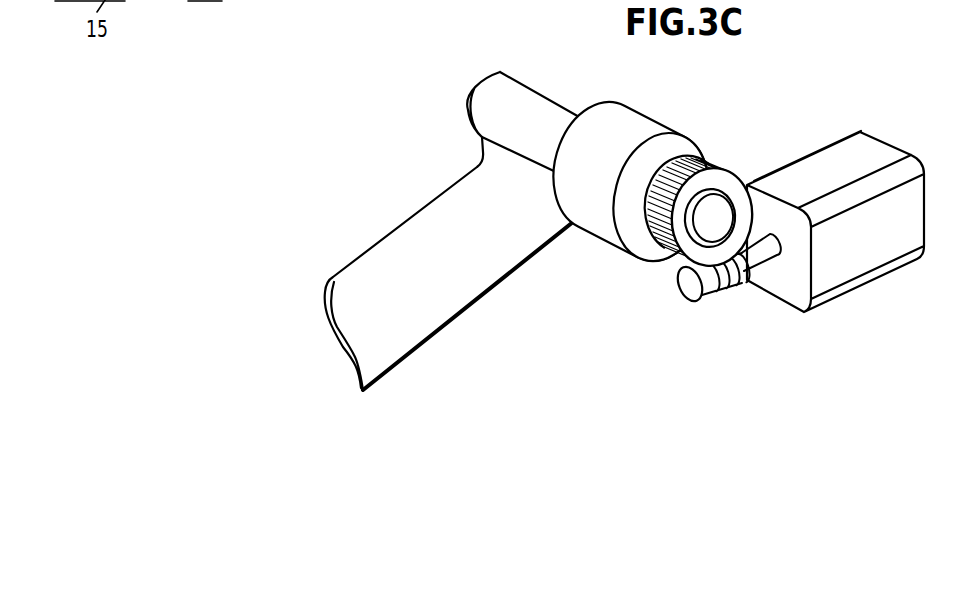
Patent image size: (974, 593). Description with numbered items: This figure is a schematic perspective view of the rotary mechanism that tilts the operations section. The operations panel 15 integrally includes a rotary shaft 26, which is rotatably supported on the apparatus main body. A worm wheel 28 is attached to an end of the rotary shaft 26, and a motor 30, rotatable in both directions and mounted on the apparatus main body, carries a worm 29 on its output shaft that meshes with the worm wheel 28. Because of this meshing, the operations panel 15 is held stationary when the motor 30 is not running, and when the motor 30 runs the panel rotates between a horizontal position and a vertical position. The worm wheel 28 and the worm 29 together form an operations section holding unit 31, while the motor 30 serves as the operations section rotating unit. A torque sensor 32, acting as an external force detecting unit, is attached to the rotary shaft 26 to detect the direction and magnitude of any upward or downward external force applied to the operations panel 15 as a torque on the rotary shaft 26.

The operations panel 15 is at (472, 291).
The rotary shaft 26 is at (541, 105).
The worm wheel 28 is at (714, 158).
The worm 29 is at (726, 288).
The motor 30 is at (853, 270).
The operations section holding unit 31 is at (654, 283).
The torque sensor 32 is at (648, 119).